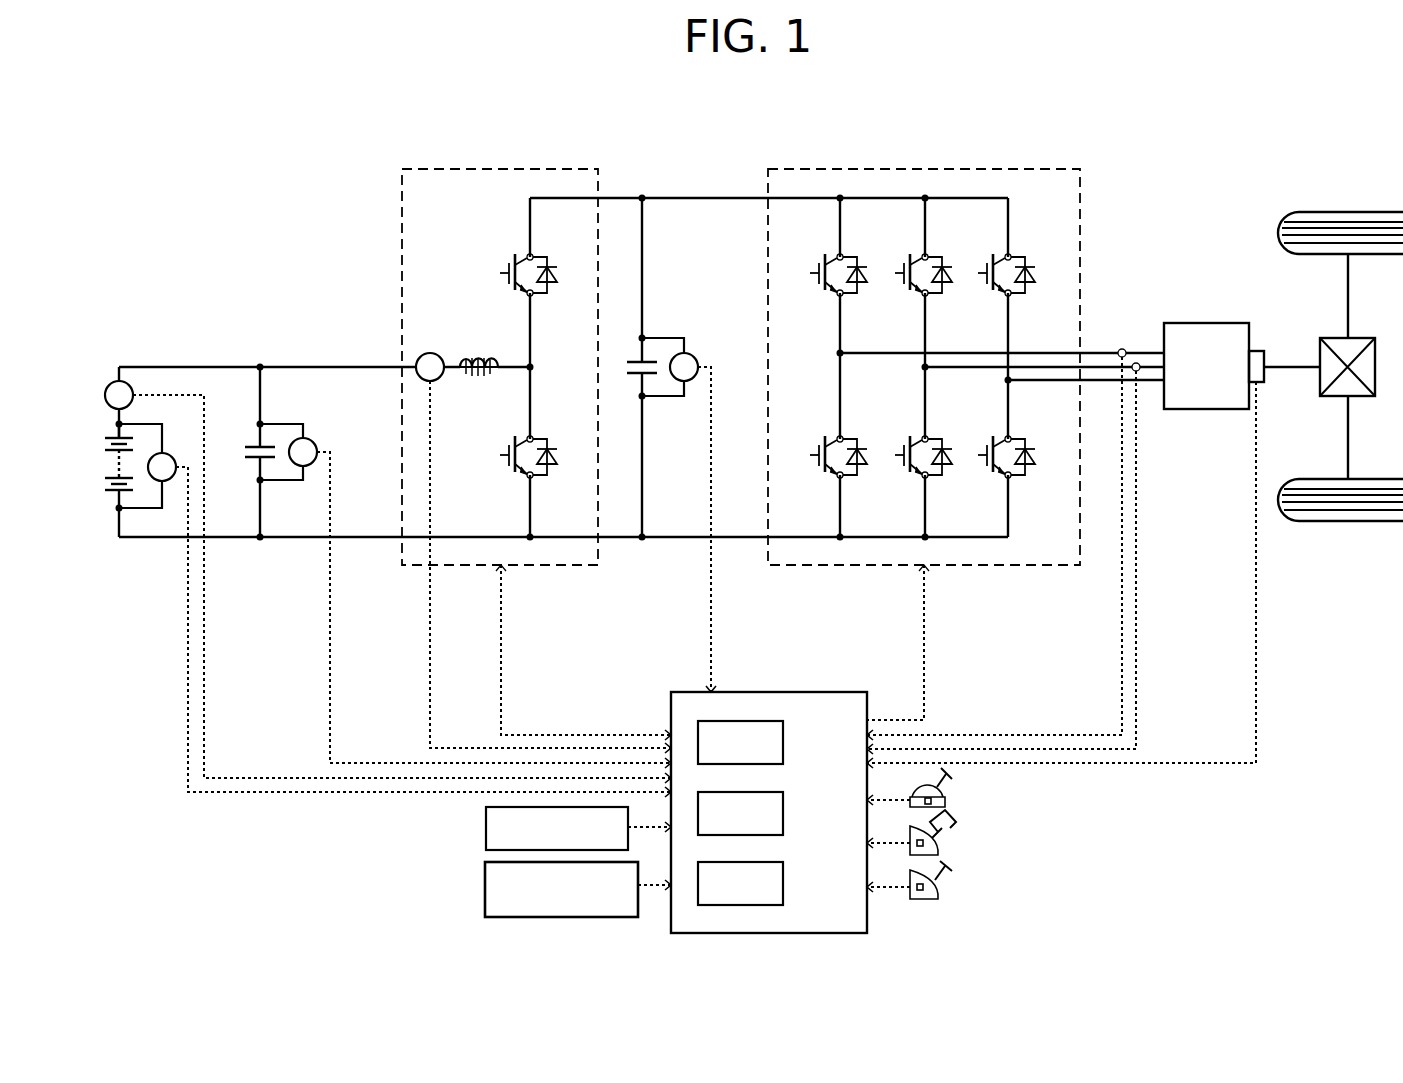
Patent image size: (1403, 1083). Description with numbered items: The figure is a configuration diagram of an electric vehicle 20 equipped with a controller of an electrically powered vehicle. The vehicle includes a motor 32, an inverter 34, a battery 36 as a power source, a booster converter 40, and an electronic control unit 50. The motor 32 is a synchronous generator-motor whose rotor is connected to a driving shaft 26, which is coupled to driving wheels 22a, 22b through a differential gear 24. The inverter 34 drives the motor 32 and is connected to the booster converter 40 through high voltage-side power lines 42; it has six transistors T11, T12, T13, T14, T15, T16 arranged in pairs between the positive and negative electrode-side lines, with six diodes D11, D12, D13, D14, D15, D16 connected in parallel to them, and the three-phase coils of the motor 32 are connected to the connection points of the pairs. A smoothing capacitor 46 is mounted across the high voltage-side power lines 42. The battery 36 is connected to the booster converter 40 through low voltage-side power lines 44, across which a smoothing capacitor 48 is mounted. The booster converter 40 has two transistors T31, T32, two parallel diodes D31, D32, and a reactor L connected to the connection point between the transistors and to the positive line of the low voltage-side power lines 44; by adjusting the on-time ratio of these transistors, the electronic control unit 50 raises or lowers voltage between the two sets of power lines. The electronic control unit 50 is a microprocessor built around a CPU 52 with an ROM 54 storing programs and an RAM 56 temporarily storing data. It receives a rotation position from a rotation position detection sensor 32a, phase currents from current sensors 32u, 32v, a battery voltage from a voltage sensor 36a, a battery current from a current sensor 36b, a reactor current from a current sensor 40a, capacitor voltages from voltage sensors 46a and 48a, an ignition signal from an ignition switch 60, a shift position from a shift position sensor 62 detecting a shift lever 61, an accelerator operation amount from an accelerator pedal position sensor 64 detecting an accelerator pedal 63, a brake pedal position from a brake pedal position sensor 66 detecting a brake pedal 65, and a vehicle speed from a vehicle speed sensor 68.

The electric vehicle 20 is at (1251, 140).
The driving wheel 22a is at (1349, 211).
The driving wheel 22b is at (1350, 522).
The differential gear 24 is at (1360, 337).
The driving shaft 26 is at (1291, 365).
The motor 32 is at (1205, 322).
The rotation position detection sensor 32a is at (1256, 350).
The current sensor 32u is at (1121, 346).
The current sensor 32v is at (1138, 360).
The inverter 34 is at (921, 168).
The battery 36 is at (115, 495).
The voltage sensor 36a is at (167, 452).
The current sensor 36b is at (114, 380).
The booster converter 40 is at (527, 168).
The current sensor 40a is at (428, 352).
The reactor L is at (481, 352).
The high voltage-side power lines 42 is at (757, 200).
The low voltage-side power lines 44 is at (368, 368).
The smoothing capacitor 46 is at (633, 355).
The voltage sensor 46a is at (690, 352).
The smoothing capacitor 48 is at (250, 440).
The voltage sensor 48a is at (308, 437).
The electronic control unit 50 is at (752, 691).
The CPU 52 is at (784, 743).
The ROM 54 is at (784, 814).
The RAM 56 is at (784, 884).
The ignition switch 60 is at (485, 826).
The shift lever 61 is at (950, 790).
The shift position sensor 62 is at (946, 801).
The accelerator pedal 63 is at (953, 828).
The accelerator pedal position sensor 64 is at (940, 843).
The brake pedal 65 is at (950, 875).
The brake pedal position sensor 66 is at (940, 888).
The vehicle speed sensor 68 is at (484, 885).
The transistor T11 is at (822, 268).
The transistor T12 is at (907, 268).
The transistor T13 is at (990, 268).
The transistor T14 is at (822, 450).
The transistor T15 is at (907, 450).
The transistor T16 is at (990, 450).
The diode D11 is at (856, 290).
The diode D12 is at (941, 290).
The diode D13 is at (1024, 290).
The diode D14 is at (856, 474).
The diode D15 is at (941, 474).
The diode D16 is at (1024, 474).
The transistor T31 is at (512, 268).
The transistor T32 is at (512, 450).
The diode D31 is at (546, 290).
The diode D32 is at (546, 474).